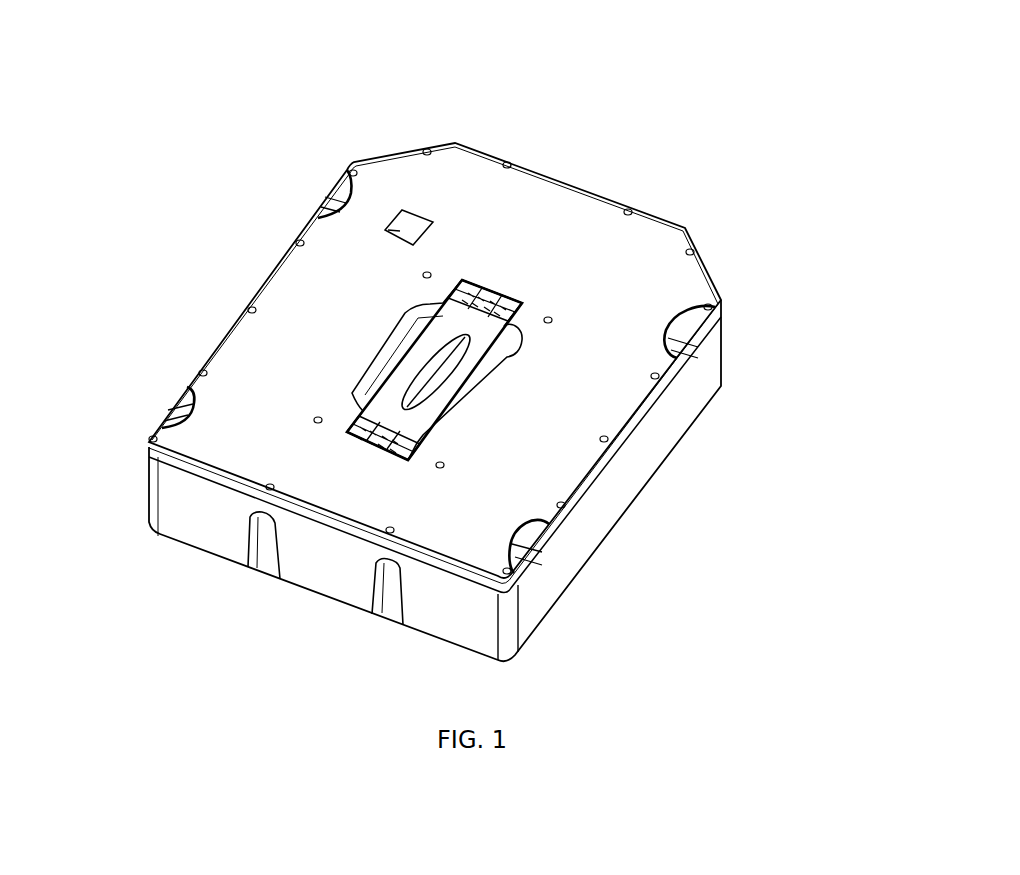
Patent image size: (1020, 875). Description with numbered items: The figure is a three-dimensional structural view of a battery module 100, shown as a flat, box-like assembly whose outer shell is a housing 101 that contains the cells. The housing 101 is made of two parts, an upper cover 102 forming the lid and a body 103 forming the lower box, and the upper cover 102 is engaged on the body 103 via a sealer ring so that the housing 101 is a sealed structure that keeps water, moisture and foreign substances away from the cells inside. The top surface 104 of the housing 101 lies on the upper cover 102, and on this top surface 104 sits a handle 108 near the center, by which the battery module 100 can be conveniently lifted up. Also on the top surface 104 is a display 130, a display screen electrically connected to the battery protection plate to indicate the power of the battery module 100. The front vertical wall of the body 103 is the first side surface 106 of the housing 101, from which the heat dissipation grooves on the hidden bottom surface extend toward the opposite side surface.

The battery module 100 is at (262, 152).
The housing 101 is at (808, 257).
The upper cover 102 is at (647, 275).
The body 103 is at (688, 390).
The top surface 104 is at (548, 200).
The first side surface 106 is at (180, 524).
The handle 108 is at (440, 365).
The display 130 is at (393, 230).